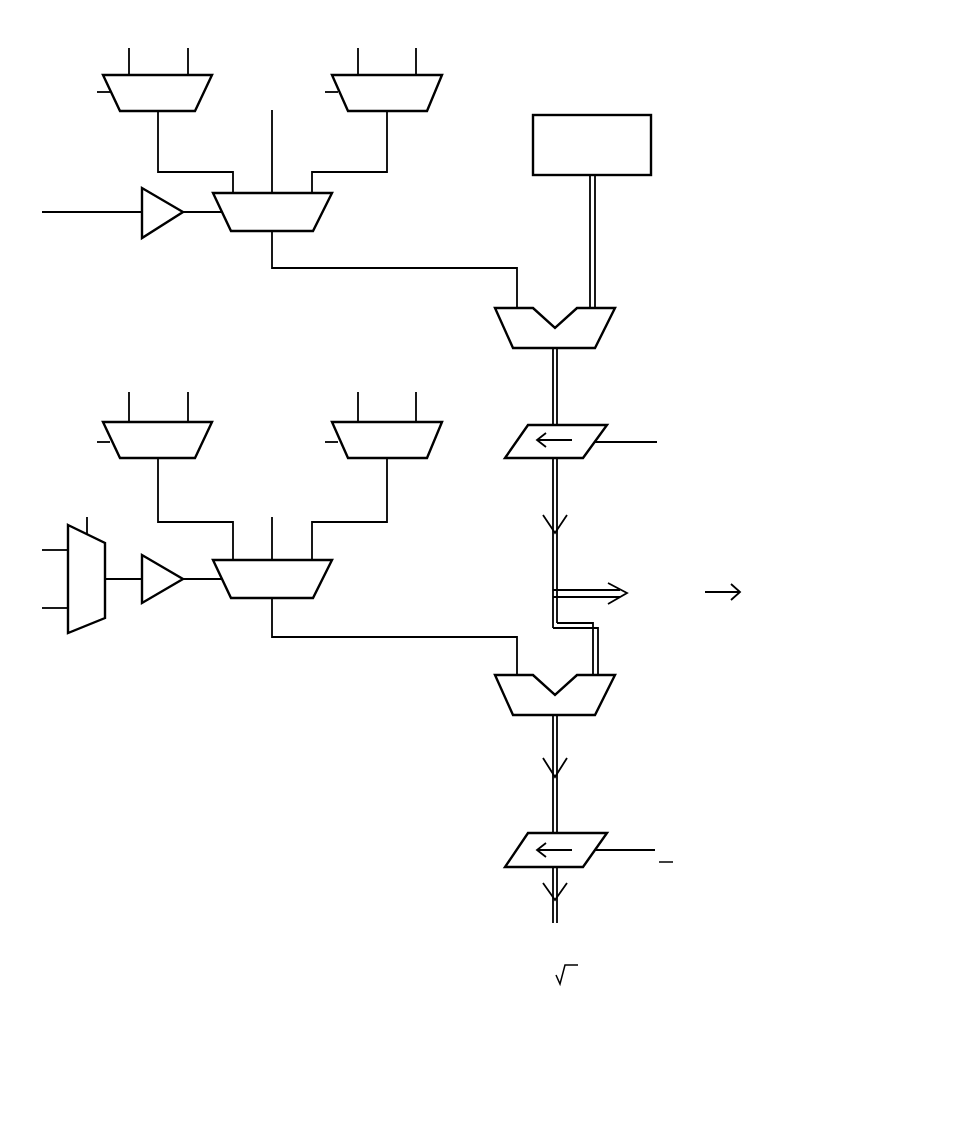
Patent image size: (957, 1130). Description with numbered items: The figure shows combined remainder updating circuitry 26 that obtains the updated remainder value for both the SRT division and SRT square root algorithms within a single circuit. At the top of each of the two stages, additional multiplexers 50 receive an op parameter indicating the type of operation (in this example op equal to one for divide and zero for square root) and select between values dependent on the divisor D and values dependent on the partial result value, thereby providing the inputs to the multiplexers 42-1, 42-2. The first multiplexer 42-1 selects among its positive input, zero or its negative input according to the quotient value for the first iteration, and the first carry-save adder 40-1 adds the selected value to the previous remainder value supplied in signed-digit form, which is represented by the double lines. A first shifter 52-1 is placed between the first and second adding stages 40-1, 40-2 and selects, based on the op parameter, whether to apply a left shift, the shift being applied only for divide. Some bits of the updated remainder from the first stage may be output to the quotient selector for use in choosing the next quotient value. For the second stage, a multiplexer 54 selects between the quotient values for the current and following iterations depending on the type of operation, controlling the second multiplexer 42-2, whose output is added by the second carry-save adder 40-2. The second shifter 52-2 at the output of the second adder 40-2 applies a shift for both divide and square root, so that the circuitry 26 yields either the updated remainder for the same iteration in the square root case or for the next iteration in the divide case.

The remainder updating circuitry 26 is at (226, 842).
The multiplexers 50 is at (173, 112).
The first multiplexer 42-1 is at (323, 212).
The second multiplexer 42-2 is at (323, 580).
The first carry-save adder 40-1 is at (607, 327).
The second carry-save adder 40-2 is at (607, 695).
The first shifter 52-1 is at (585, 423).
The second shifter 52-2 is at (585, 832).
The multiplexer 54 is at (87, 625).